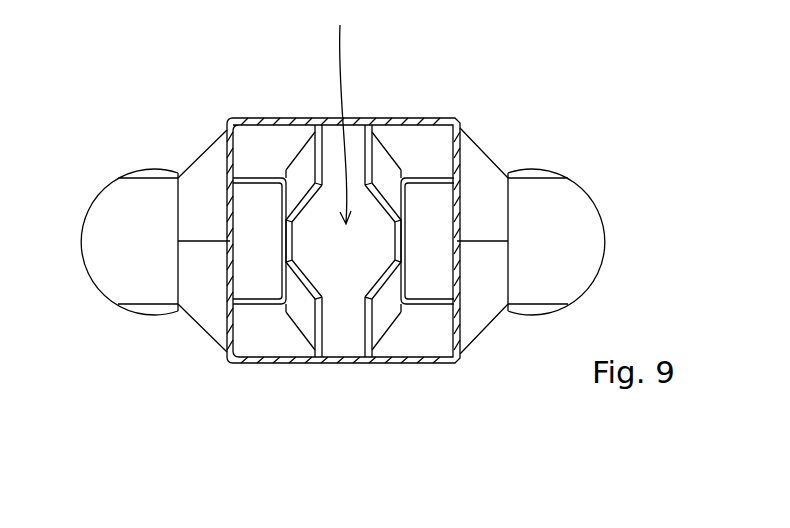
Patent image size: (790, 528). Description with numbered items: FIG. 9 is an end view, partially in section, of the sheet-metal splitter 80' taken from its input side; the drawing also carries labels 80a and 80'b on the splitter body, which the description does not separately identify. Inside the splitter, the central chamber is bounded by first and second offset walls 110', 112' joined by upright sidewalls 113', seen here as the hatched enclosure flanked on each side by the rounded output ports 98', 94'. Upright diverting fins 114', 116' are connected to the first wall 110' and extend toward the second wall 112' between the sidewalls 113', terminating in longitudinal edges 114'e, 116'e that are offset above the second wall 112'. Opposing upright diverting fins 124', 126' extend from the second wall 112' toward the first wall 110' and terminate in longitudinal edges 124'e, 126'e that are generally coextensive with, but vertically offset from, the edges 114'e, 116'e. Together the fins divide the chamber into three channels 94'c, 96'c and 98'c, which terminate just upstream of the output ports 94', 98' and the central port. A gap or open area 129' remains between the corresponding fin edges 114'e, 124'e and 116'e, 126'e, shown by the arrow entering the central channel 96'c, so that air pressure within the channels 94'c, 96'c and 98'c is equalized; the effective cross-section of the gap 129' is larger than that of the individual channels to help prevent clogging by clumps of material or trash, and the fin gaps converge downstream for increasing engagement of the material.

The splitter 80' is at (363, 192).
The first end of socket body 80a is at (225, 128).
The second end of socket body 80'b is at (283, 379).
The first offset wall 110' is at (232, 189).
The second offset wall 112' is at (325, 288).
The upright sidewalls 113' is at (332, 223).
The output port 98' is at (125, 205).
The output port 94' is at (560, 196).
The channel 98'c is at (259, 241).
The channel 94'c is at (427, 241).
The channel 96'c is at (343, 241).
The upright diverting fin 116' is at (283, 122).
The longitudinal edge 116'e is at (304, 117).
The upright diverting fin 114' is at (402, 118).
The longitudinal edge 114'e is at (385, 119).
The upright diverting fin 126' is at (283, 365).
The longitudinal edge 126'e is at (316, 363).
The upright diverting fin 124' is at (408, 365).
The longitudinal edge 124'e is at (365, 371).
The gap or open area 129' is at (342, 112).